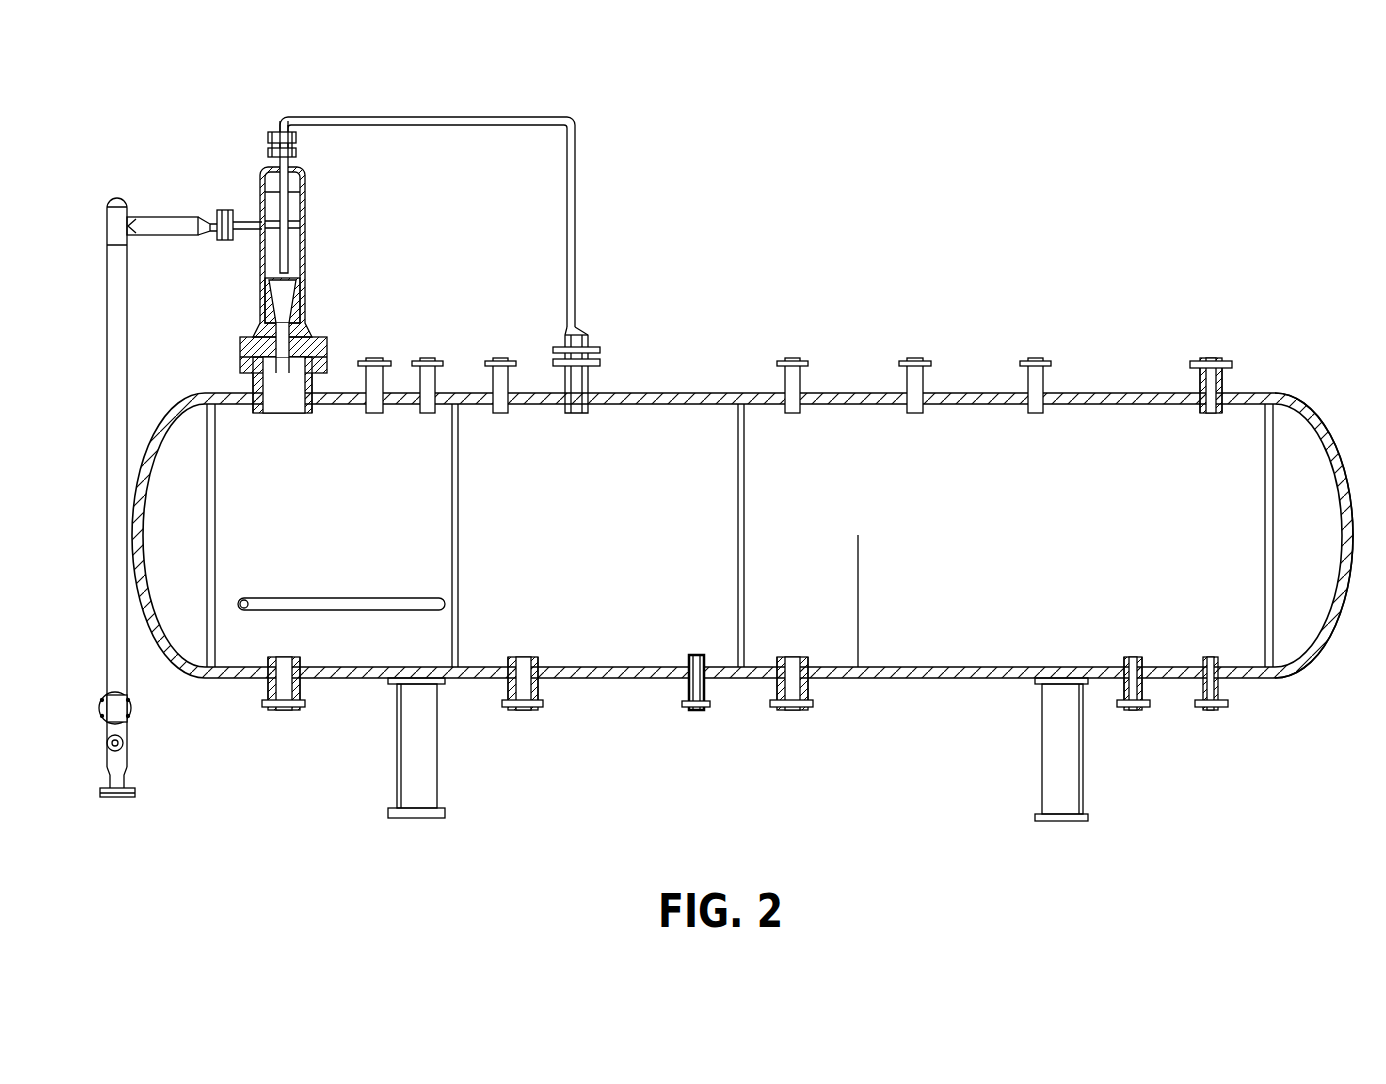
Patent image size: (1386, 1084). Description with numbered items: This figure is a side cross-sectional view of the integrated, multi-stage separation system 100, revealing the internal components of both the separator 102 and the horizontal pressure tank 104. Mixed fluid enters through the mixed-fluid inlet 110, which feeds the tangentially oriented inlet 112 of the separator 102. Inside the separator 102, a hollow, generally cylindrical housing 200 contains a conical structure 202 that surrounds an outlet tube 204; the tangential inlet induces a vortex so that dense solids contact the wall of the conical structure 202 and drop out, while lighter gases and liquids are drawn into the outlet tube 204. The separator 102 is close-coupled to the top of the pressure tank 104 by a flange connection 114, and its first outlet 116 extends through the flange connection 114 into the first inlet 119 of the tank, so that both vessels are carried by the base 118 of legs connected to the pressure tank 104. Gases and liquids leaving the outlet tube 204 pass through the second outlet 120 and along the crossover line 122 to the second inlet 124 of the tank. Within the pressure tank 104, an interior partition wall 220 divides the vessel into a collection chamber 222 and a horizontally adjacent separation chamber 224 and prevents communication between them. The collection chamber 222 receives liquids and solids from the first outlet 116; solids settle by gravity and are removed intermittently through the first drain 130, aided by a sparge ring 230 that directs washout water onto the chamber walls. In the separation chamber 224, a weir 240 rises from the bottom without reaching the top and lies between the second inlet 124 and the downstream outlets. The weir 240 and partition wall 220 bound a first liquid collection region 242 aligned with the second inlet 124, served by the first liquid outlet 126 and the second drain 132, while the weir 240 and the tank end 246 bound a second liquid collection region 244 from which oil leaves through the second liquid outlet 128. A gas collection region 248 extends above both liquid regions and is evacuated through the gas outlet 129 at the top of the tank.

The integrated, multi-stage separation system 100 is at (1181, 130).
The separator 102 is at (262, 178).
The pressure tank 104 is at (688, 393).
The mixed-fluid inlet 110 is at (132, 712).
The inlet 112 is at (226, 242).
The flange connection 114 is at (240, 353).
The first outlet 116 is at (300, 336).
The base 118 is at (440, 800).
The first inlet 119 is at (295, 420).
The second outlet 120 is at (296, 150).
The crossover line 122 is at (416, 117).
The second inlet 124 is at (554, 350).
The first liquid outlet 126 is at (522, 711).
The second liquid outlet 128 is at (1134, 711).
The gas outlet 129 is at (1211, 358).
The first drain 130 is at (284, 711).
The second drain 132 is at (795, 711).
The housing 200 is at (306, 268).
The conical structure 202 is at (295, 302).
The outlet tube 204 is at (290, 238).
The interior partition wall 220 is at (459, 508).
The collection chamber 222 is at (384, 434).
The separation chamber 224 is at (958, 440).
The sparge ring 230 is at (376, 598).
The weir 240 is at (859, 590).
The first liquid collection region 242 is at (672, 582).
The second liquid collection region 244 is at (1110, 584).
The end 246 is at (1313, 412).
The gas collection region 248 is at (874, 452).